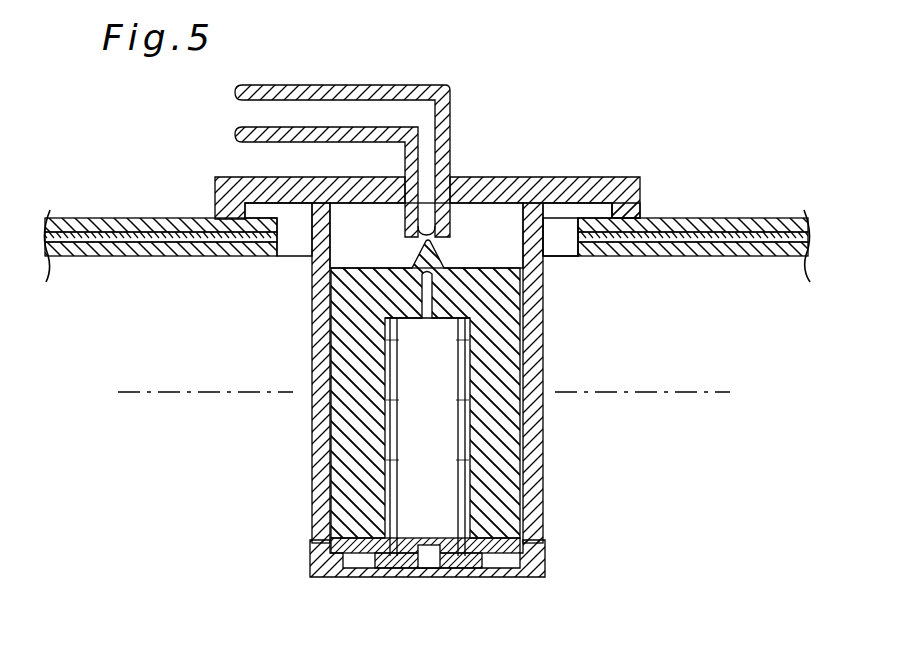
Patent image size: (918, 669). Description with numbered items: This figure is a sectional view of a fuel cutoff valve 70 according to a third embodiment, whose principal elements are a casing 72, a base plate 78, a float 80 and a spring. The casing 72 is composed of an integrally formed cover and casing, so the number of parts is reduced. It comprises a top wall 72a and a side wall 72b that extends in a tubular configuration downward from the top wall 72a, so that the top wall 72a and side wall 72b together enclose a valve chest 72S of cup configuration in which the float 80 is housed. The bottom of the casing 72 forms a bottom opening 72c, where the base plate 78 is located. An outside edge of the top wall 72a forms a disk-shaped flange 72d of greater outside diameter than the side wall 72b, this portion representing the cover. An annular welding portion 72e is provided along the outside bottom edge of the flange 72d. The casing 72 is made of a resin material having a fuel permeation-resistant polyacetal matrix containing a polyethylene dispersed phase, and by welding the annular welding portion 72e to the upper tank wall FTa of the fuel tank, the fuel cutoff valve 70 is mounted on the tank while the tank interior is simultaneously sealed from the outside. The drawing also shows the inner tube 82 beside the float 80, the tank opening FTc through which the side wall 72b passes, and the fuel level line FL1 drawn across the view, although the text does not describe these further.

The fuel cutoff valve 70 is at (475, 333).
The casing 72 is at (468, 175).
The top wall 72a is at (527, 177).
The side wall 72b is at (541, 368).
The bottom opening 72c is at (512, 557).
The flange 72d is at (588, 186).
The annular welding portion 72e is at (630, 206).
The valve chest 72S is at (352, 258).
The base plate 78 is at (450, 563).
The float 80 is at (503, 442).
The inner tube 82 is at (467, 471).
The upper tank wall FTa is at (692, 218).
The tank opening FTc is at (572, 252).
The fuel level line FL1 is at (716, 391).